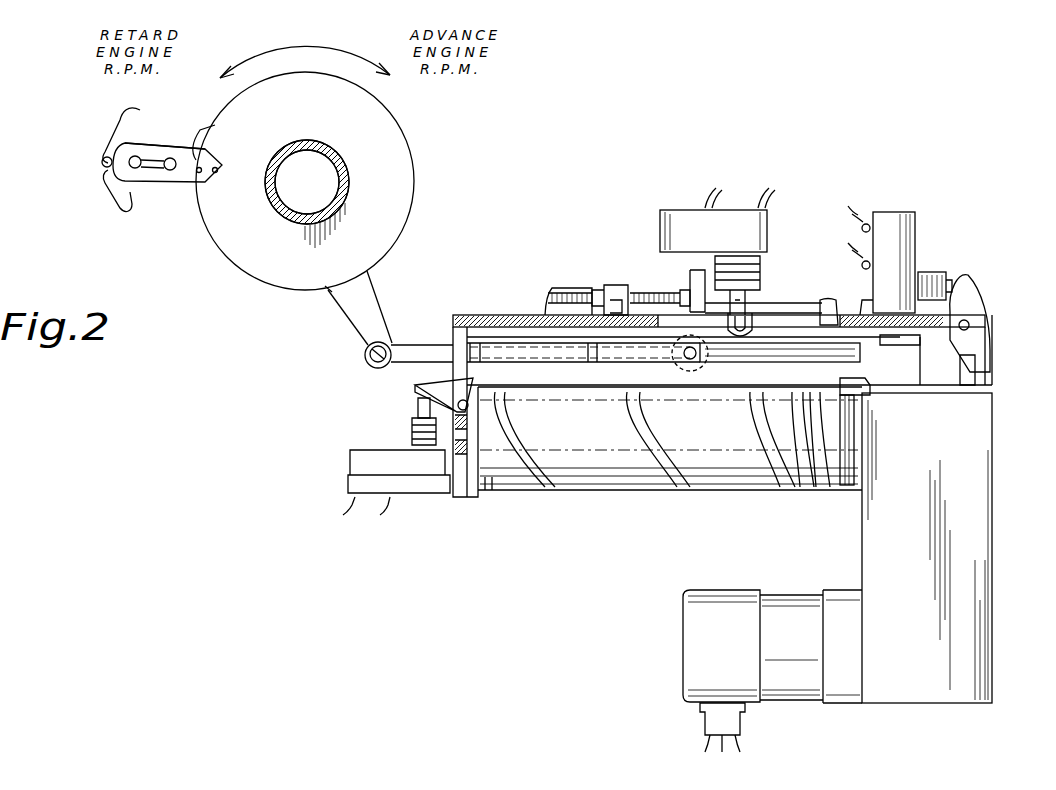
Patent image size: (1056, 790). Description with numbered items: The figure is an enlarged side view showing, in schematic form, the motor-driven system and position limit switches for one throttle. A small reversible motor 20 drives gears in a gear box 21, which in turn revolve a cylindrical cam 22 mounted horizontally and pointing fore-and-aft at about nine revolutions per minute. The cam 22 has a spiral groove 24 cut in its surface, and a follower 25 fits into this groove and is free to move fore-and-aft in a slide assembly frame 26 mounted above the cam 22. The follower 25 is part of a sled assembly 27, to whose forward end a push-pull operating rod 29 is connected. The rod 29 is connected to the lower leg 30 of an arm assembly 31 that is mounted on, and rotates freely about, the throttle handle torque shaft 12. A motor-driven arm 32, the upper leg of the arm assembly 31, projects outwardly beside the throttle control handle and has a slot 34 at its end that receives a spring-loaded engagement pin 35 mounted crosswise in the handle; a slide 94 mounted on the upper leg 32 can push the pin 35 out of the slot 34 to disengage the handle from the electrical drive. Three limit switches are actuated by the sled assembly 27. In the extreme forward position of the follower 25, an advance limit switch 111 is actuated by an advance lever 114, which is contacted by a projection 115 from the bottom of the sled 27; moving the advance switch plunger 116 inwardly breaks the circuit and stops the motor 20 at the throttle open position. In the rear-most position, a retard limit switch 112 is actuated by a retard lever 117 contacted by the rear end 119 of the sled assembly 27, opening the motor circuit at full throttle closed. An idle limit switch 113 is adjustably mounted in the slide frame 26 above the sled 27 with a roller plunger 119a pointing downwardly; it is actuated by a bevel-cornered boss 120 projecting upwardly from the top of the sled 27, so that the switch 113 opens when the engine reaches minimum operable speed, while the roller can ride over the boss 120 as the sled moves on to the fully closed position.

The torque shaft 12 is at (345, 170).
The reversible motor 20 is at (786, 692).
The gear box 21 is at (975, 522).
The cylindrical cam 22 is at (662, 439).
The spiral groove 24 is at (548, 487).
The follower 25 is at (866, 392).
The slide assembly frame 26 is at (500, 314).
The sled assembly 27 is at (812, 363).
The push-pull operating rod 29 is at (420, 342).
The lower leg 30 is at (348, 320).
The arm assembly 31 is at (266, 262).
The motor-driven arm 32 is at (170, 185).
The slot 34 is at (108, 183).
The engagement pin 35 is at (100, 163).
The slide 94 is at (180, 150).
The advance limit switch 111 is at (417, 495).
The retard limit switch 112 is at (905, 232).
The idle limit switch 113 is at (678, 215).
The advance lever 114 is at (420, 392).
The projection 115 is at (840, 417).
The advance switch plunger 116 is at (410, 412).
The retard lever 117 is at (965, 290).
The rear end 119 is at (966, 358).
The roller plunger 119a is at (757, 317).
The bevel-cornered boss 120 is at (910, 340).